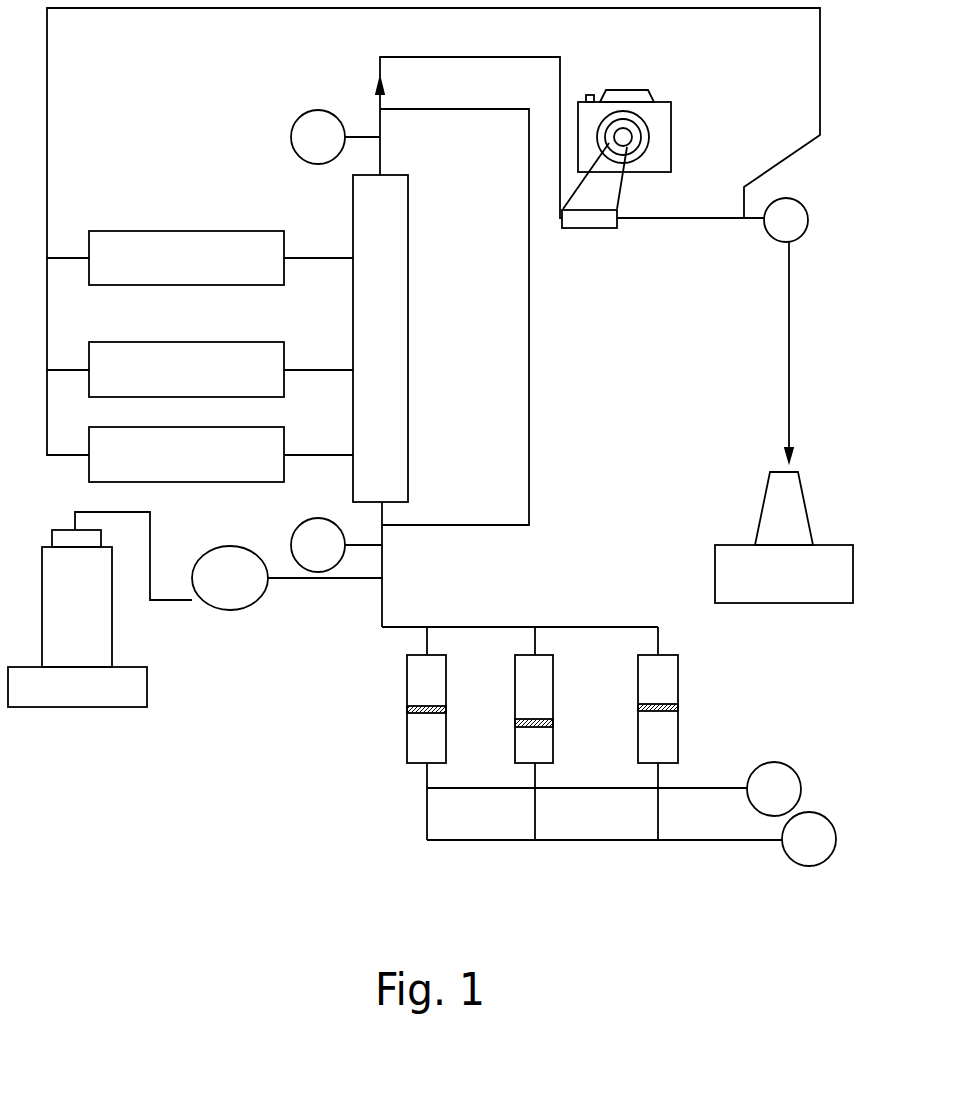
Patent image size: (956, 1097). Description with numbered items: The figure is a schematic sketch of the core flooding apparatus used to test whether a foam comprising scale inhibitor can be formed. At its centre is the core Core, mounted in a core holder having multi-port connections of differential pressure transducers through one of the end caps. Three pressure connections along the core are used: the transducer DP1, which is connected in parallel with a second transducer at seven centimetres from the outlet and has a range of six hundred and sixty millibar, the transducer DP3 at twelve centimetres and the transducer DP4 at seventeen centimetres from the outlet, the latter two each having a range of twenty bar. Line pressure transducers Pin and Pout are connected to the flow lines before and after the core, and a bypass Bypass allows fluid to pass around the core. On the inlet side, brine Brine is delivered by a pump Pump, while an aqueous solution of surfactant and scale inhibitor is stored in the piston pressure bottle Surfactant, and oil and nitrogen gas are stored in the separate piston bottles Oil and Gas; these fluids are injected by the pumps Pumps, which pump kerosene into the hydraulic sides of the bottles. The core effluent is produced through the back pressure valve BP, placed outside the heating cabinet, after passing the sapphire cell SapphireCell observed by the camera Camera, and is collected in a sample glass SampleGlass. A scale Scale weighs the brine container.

The differential pressure transducer DP1 is at (200, 258).
The differential pressure transducer DP3 is at (200, 369).
The differential pressure transducer DP4 is at (221, 454).
The core Core is at (428, 338).
The outlet line pressure transducer Pout is at (335, 137).
The inlet line pressure transducer Pin is at (336, 545).
The bypass Bypass is at (545, 533).
The camera Camera is at (678, 130).
The sapphire cell SapphireCell is at (591, 218).
The back pressure valve BP is at (805, 330).
The sample glass SampleGlass is at (742, 530).
The brine Brine is at (117, 589).
The pump Pump is at (287, 597).
The scale Scale is at (77, 706).
The surfactant and scale inhibitor pressure bottle Surfactant is at (392, 712).
The oil pressure bottle Oil is at (508, 709).
The gas pressure bottle Gas is at (623, 709).
The pumps Pumps is at (808, 801).